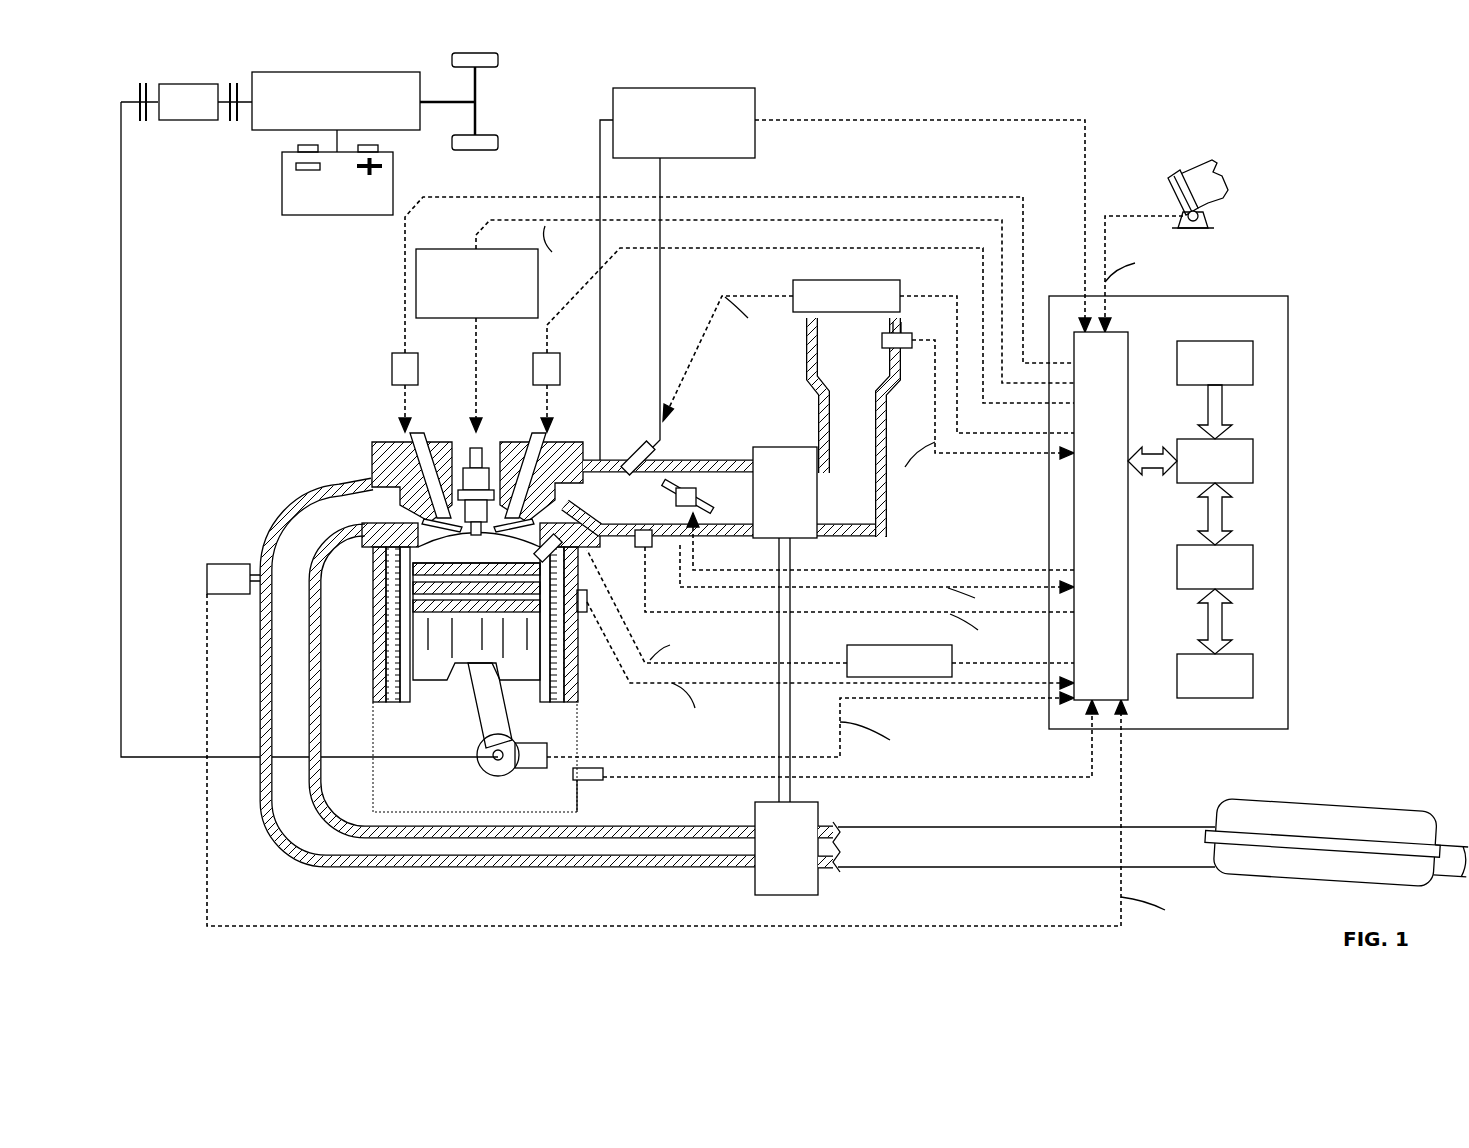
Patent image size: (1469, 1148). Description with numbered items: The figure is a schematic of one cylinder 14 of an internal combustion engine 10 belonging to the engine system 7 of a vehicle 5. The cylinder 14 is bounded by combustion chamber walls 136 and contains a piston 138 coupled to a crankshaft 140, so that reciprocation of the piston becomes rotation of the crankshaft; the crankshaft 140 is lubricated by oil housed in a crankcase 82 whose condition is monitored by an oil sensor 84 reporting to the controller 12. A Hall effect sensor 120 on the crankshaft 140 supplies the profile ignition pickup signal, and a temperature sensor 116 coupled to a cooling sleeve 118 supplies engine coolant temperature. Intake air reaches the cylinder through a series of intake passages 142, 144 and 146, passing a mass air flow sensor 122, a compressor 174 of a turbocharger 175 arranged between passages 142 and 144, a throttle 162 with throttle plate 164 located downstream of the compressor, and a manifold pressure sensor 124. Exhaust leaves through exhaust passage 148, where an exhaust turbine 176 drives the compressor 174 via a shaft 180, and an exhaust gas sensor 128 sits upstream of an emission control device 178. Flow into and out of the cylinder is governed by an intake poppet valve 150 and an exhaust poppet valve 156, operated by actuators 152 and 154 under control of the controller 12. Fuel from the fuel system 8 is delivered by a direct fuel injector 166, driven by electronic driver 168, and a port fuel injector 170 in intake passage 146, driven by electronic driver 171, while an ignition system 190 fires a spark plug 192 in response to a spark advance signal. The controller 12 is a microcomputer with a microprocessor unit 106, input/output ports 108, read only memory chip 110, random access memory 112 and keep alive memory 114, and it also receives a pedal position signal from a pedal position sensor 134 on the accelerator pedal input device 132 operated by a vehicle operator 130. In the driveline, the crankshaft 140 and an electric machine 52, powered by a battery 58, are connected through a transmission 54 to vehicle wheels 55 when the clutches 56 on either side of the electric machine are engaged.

The vehicle 5 is at (1378, 108).
The engine system 7 is at (1350, 712).
The fuel system 8 is at (722, 90).
The internal combustion engine 10 is at (308, 396).
The controller 12 is at (1211, 499).
The cylinder 14 is at (470, 548).
The electric machine 52 is at (195, 121).
The transmission 54 is at (398, 130).
The vehicle wheels 55 is at (478, 152).
The clutches 56 is at (139, 92).
The battery 58 is at (335, 215).
The crankcase 82 is at (577, 812).
The sensor 84 is at (603, 775).
The microprocessor unit 106 is at (1253, 456).
The input/output ports 108 is at (1128, 340).
The read only memory chip 110 is at (1253, 356).
The random access memory 112 is at (1253, 566).
The keep alive memory 114 is at (1253, 673).
The temperature sensor 116 is at (582, 612).
The cooling sleeve 118 is at (576, 652).
The Hall effect sensor 120 is at (535, 768).
The mass air flow sensor 122 is at (901, 333).
The manifold pressure sensor 124 is at (647, 550).
The exhaust gas sensor 128 is at (207, 568).
The vehicle operator 130 is at (1213, 237).
The input device 132 is at (1170, 185).
The pedal position sensor 134 is at (1208, 218).
The combustion chamber walls 136 is at (405, 695).
The piston 138 is at (465, 668).
The crankshaft 140 is at (490, 775).
The intake air passage 142 is at (853, 427).
The intake air passage 144 is at (801, 506).
The intake air passage 146 is at (659, 498).
The exhaust passage 148 is at (510, 672).
The intake poppet valve 150 is at (530, 495).
The actuator 152 is at (532, 365).
The actuator 154 is at (390, 360).
The exhaust poppet valve 156 is at (418, 478).
The throttle 162 is at (700, 490).
The throttle plate 164 is at (666, 484).
The fuel injector 166 is at (555, 535).
The electronic driver 168 is at (847, 650).
The fuel injector 170 is at (630, 447).
The electronic driver 171 is at (793, 284).
The compressor 174 is at (785, 492).
The turbocharger 175 is at (784, 896).
The exhaust turbine 176 is at (985, 848).
The emission control device 178 is at (1395, 810).
The shaft 180 is at (792, 785).
The ignition system 190 is at (466, 250).
The spark plug 192 is at (470, 465).